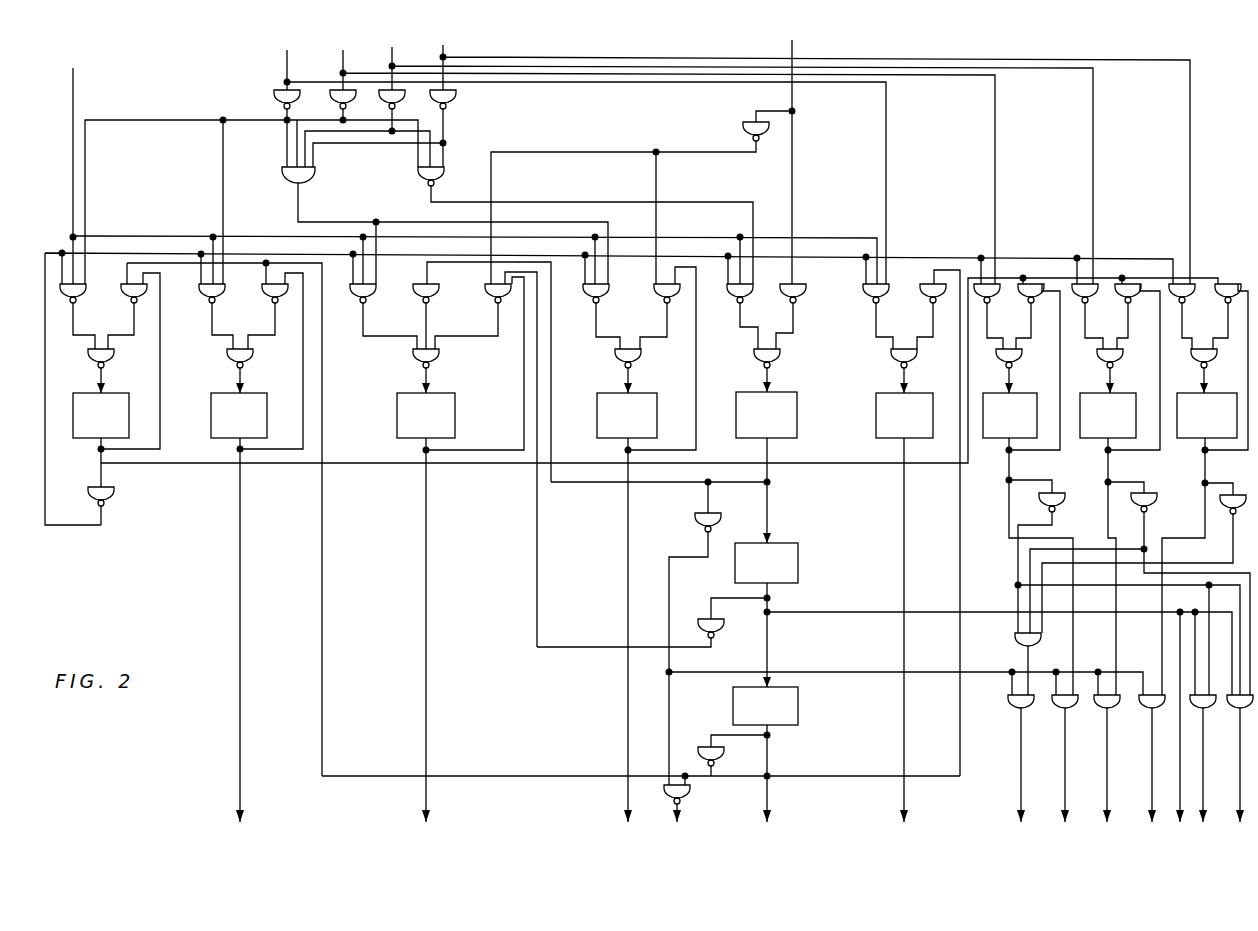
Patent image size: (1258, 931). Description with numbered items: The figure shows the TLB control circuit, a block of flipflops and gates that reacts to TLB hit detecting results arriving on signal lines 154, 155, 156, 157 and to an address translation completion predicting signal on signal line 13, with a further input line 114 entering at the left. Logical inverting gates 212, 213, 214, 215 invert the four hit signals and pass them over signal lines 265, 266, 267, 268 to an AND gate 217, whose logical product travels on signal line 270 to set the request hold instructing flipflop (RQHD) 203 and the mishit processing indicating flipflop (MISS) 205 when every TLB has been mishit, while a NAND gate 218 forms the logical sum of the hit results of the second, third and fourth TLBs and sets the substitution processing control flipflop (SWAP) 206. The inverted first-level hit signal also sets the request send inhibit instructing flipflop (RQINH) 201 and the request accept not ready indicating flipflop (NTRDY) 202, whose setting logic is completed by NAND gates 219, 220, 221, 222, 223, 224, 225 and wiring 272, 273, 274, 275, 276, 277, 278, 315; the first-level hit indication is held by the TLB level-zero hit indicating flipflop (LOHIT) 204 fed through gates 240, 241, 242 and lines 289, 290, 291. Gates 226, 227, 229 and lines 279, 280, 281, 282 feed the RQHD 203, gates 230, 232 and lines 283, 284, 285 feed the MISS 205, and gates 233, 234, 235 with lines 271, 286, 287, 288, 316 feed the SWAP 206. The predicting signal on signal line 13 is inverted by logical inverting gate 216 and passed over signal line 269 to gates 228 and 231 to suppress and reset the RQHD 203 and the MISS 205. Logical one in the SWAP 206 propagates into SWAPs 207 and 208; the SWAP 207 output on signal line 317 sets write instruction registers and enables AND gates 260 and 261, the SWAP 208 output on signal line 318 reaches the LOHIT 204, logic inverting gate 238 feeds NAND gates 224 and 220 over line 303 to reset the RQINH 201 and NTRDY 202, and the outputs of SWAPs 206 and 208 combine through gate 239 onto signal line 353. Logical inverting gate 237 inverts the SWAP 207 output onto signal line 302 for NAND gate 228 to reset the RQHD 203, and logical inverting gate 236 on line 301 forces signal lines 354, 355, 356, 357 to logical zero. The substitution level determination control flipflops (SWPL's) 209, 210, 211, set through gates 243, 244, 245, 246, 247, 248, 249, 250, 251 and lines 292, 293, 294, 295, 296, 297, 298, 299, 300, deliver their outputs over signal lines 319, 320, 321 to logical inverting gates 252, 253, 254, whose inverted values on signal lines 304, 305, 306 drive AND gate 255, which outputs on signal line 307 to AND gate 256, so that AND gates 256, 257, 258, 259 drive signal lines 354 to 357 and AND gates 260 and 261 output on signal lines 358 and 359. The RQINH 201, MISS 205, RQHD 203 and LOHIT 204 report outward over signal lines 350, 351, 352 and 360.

The signal line 13 is at (795, 106).
The input line 114 is at (74, 84).
The signal line 154 is at (286, 56).
The signal line 155 is at (341, 56).
The signal line 156 is at (390, 58).
The signal line 157 is at (441, 50).
The request send inhibit instructing flipflop (RQINH) 201 is at (211, 405).
The request accept not ready indicating flipflop (NTRDY) 202 is at (73, 405).
The request hold instructing flipflop (RQHD) 203 is at (456, 420).
The TLB level 0 hit indicating flipflop (LOHIT) 204 is at (876, 408).
The mishit processing indicating flipflop (MISS) 205 is at (597, 405).
The substitution processing control flipflop (SWAP) 206 is at (736, 420).
The substitution processing control flipflop (SWAP) 207 is at (800, 548).
The substitution processing control flipflop (SWAP) 208 is at (800, 712).
The substitution level determination control flipflop (SWPL) 209 is at (995, 440).
The substitution level determination control flipflop (SWPL) 210 is at (1105, 442).
The substitution level determination control flipflop (SWPL) 211 is at (1202, 445).
The logical inverting gate 212 is at (293, 100).
The logical inverting gate 213 is at (352, 100).
The logical inverting gate 214 is at (401, 100).
The logical inverting gate 215 is at (452, 100).
The logical inverting gate 216 is at (744, 130).
The AND gate 217 is at (315, 180).
The NAND gate 218 is at (445, 180).
The NAND gate 219 is at (63, 301).
The NAND gate 220 is at (124, 287).
The NAND gate 221 is at (88, 357).
The NAND gate 222 is at (113, 498).
The NAND gate 223 is at (204, 300).
The NAND gate 224 is at (265, 287).
The NAND gate 225 is at (228, 362).
The NAND gate 226 is at (352, 298).
The NAND gate 227 is at (412, 287).
The NAND gate 228 is at (488, 287).
The NAND gate 229 is at (414, 362).
The NAND gate 230 is at (585, 298).
The AND gate 231 is at (655, 287).
The NAND gate 232 is at (643, 360).
The NAND gate 233 is at (728, 298).
The NAND gate 234 is at (803, 287).
The NAND gate 235 is at (780, 362).
The logical inverting gate 236 is at (696, 520).
The logical inverting gate 237 is at (720, 643).
The logic inverting gate 238 is at (700, 750).
The NAND gate 239 is at (665, 790).
The NAND gate 240 is at (870, 305).
The NAND gate 241 is at (922, 287).
The NAND gate 242 is at (900, 368).
The NAND gate 243 is at (985, 287).
The NAND gate 244 is at (1030, 287).
The NAND gate 245 is at (1023, 355).
The NAND gate 246 is at (1090, 287).
The NAND gate 247 is at (1133, 287).
The NAND gate 248 is at (1120, 362).
The NAND gate 249 is at (1185, 287).
The NAND gate 250 is at (1230, 287).
The NAND gate 251 is at (1190, 312).
The logical inverting gate 252 is at (1058, 493).
The logical inverting gate 253 is at (1140, 510).
The logical inverting gate 254 is at (1222, 496).
The AND gate 255 is at (1015, 636).
The AND gate 256 is at (1010, 708).
The AND gate 257 is at (1055, 710).
The AND gate 258 is at (1097, 710).
The AND gate 259 is at (1142, 710).
The AND gate 260 is at (1190, 695).
The AND gate 261 is at (1230, 712).
The signal line 265 is at (170, 120).
The signal line 266 is at (345, 125).
The signal line 267 is at (394, 133).
The signal line 268 is at (447, 140).
The signal line 269 is at (742, 152).
The signal line 270 is at (295, 206).
The line 271 is at (580, 202).
The line 272 is at (80, 333).
The line 273 is at (118, 338).
The line 274 is at (106, 378).
The line 275 is at (105, 528).
The line 276 is at (228, 332).
The line 277 is at (263, 338).
The line 278 is at (247, 378).
The line 279 is at (404, 335).
The line 280 is at (430, 337).
The line 281 is at (470, 338).
The line 282 is at (430, 380).
The line 283 is at (603, 335).
The line 284 is at (667, 310).
The line 285 is at (620, 370).
The line 286 is at (742, 327).
The line 287 is at (782, 325).
The line 288 is at (768, 375).
The line 289 is at (880, 335).
The line 290 is at (922, 338).
The line 291 is at (907, 380).
The line 292 is at (983, 340).
The line 293 is at (990, 308).
The line 294 is at (1012, 380).
The line 295 is at (1085, 336).
The line 296 is at (1122, 337).
The line 297 is at (1104, 365).
The line 298 is at (1183, 340).
The line 299 is at (1218, 340).
The line 300 is at (1208, 380).
The line 301 is at (670, 600).
The signal line 302 is at (640, 647).
The line 303 is at (713, 775).
The signal line 304 is at (1053, 520).
The signal line 305 is at (1146, 540).
The signal line 306 is at (1230, 540).
The signal line 307 is at (1025, 660).
The line 315 is at (97, 455).
The line 316 is at (770, 475).
The signal line 317 is at (775, 610).
The signal line 318 is at (772, 755).
The signal line 319 is at (1013, 462).
The signal line 320 is at (1112, 470).
The signal line 321 is at (1208, 470).
The signal line 350 is at (243, 805).
The signal line 351 is at (622, 797).
The signal line 352 is at (430, 805).
The signal line 353 is at (683, 818).
The signal line 354 is at (1018, 790).
The signal line 355 is at (1063, 790).
The signal line 356 is at (1105, 790).
The signal line 357 is at (1150, 790).
The signal line 358 is at (1203, 780).
The signal line 359 is at (1233, 790).
The signal line 360 is at (900, 814).